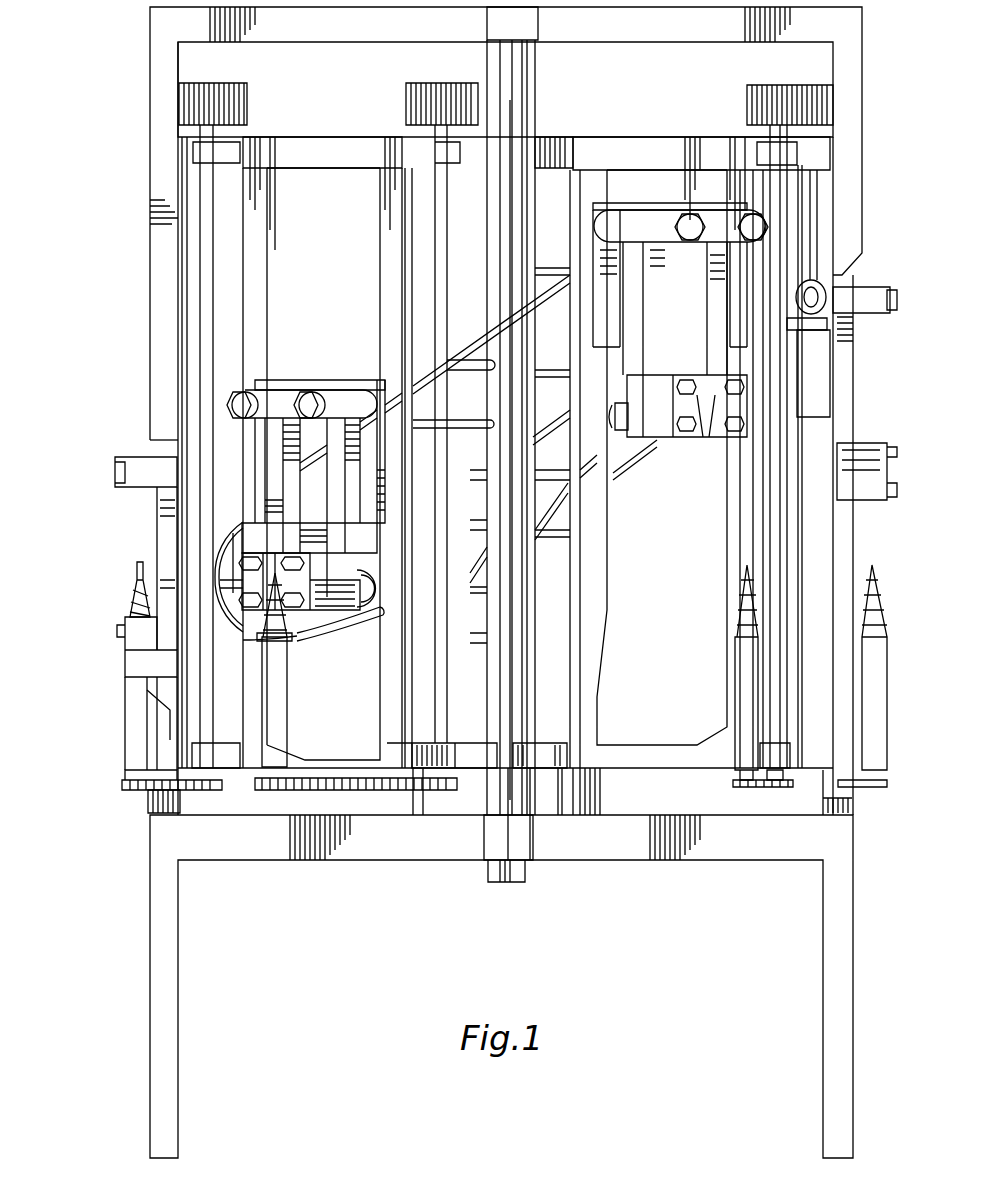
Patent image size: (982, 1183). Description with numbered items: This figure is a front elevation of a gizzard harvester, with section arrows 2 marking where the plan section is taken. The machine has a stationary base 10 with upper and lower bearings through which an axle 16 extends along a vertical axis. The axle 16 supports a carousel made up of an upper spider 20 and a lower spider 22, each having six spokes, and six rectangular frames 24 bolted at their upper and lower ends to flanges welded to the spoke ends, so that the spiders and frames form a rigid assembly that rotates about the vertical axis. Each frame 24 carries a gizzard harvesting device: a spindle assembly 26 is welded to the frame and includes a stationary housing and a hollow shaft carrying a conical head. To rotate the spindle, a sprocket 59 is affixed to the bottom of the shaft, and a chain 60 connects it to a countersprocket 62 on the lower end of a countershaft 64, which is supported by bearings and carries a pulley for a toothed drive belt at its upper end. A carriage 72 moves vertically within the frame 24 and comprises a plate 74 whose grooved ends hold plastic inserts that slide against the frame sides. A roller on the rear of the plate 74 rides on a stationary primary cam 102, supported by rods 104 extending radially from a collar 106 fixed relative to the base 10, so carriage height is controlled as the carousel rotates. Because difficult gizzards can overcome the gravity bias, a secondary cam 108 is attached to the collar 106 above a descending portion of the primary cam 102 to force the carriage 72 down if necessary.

The section line 2- 2 is at (122, 0).
The stationary base 10 is at (178, 938).
The axle 16 is at (512, 70).
The upper spider 20 is at (550, 143).
The lower spider 22 is at (552, 753).
The rectangular frame 24 is at (327, 147).
The spindle assembly 26 is at (143, 703).
The sprocket 59 is at (737, 787).
The chain 60 is at (767, 787).
The countersprocket 62 is at (795, 790).
The countershaft 64 is at (837, 620).
The carriage 72 is at (335, 340).
The carriage plate 74 is at (357, 380).
The primary cam 102 is at (627, 457).
The rod 104 is at (357, 640).
The collar 106 is at (515, 572).
The secondary cam 108 is at (668, 330).